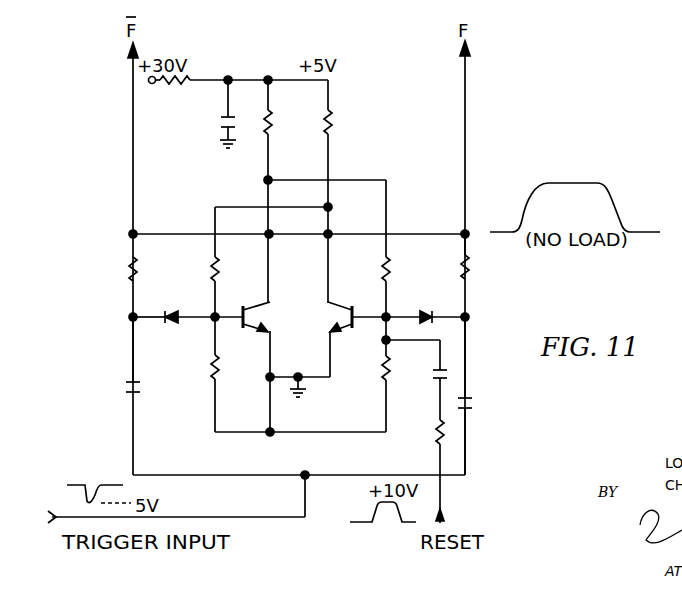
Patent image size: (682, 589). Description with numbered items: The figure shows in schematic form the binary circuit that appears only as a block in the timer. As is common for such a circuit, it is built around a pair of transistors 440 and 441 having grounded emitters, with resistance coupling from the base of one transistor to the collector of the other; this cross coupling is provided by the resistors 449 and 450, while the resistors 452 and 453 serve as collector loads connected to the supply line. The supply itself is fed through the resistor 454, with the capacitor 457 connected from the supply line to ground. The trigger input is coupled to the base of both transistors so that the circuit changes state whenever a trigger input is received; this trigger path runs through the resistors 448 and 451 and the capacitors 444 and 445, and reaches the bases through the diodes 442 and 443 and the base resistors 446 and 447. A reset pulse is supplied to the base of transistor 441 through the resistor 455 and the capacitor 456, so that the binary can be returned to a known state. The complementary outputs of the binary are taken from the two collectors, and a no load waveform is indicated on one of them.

The transistor 440 is at (236, 310).
The transistor 441 is at (367, 293).
The diode 442 is at (168, 323).
The diode 443 is at (452, 302).
The capacitor 444 is at (127, 385).
The capacitor 445 is at (500, 398).
The resistor 446 is at (207, 363).
The resistor 447 is at (380, 363).
The resistor 448 is at (125, 273).
The resistor 449 is at (208, 272).
The resistor 450 is at (418, 268).
The resistor 451 is at (492, 273).
The resistor 452 is at (283, 118).
The resistor 453 is at (360, 123).
The resistor 454 is at (195, 73).
The resistor 455 is at (428, 427).
The capacitor 456 is at (436, 371).
The capacitor 457 is at (218, 126).